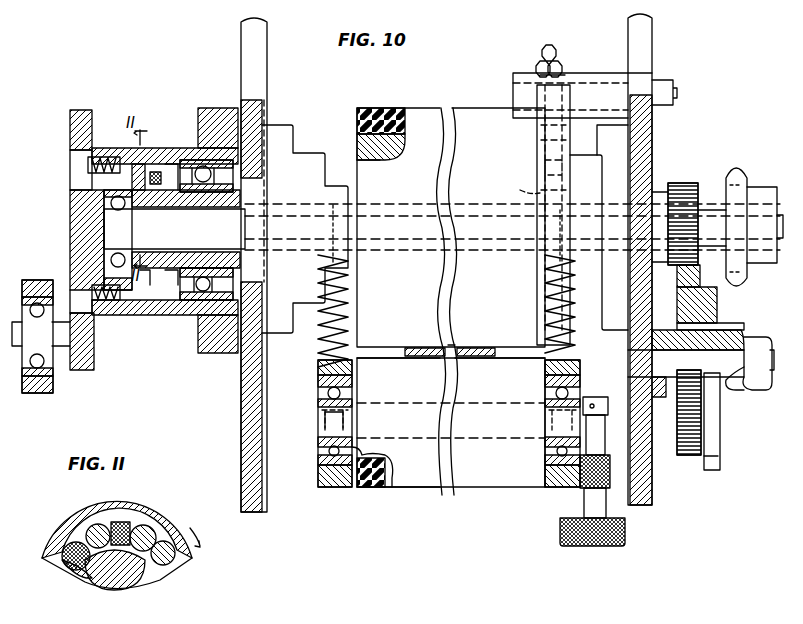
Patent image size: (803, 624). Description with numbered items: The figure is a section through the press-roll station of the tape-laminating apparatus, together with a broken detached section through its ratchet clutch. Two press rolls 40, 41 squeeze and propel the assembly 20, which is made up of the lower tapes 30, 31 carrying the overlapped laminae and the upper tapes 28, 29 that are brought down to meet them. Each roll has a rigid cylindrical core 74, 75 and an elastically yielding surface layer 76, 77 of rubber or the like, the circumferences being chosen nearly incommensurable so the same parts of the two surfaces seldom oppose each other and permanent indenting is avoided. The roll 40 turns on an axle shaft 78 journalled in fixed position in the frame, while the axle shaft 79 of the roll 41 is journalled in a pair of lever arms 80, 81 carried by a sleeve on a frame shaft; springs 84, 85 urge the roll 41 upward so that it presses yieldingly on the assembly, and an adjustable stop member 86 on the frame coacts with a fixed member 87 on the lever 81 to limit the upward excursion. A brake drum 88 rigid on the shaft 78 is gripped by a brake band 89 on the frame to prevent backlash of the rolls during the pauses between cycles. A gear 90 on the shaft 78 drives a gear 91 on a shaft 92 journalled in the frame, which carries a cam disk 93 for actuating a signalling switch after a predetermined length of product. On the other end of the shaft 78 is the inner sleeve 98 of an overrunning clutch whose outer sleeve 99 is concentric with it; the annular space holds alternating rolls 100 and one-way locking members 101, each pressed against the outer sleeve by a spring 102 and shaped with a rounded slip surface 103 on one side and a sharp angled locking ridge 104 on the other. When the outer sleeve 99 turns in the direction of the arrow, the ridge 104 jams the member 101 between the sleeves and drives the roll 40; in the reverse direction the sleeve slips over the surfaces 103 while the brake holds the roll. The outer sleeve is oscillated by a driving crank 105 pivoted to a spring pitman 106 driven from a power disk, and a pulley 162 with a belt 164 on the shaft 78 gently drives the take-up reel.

In FIG. 10, the assembly 20 is at (462, 345).
In FIG. 10, the tape 28 is at (414, 356).
In FIG. 10, the tape 29 is at (480, 356).
In FIG. 10, the tape 30 is at (414, 362).
In FIG. 10, the tape 31 is at (478, 360).
In FIG. 10, the press roll 40 is at (480, 120).
In FIG. 10, the press roll 41 is at (440, 480).
In FIG. 10, the rigid cylindrical core 74 is at (362, 148).
In FIG. 10, the rigid cylindrical core 75 is at (392, 488).
In FIG. 10, the elastically yielding surface layer 76 is at (404, 114).
In FIG. 10, the elastically yielding surface layer 77 is at (372, 488).
In FIG. 10, the axle shaft 78 is at (112, 231).
In FIG. 11, the axle shaft 78 is at (130, 586).
In FIG. 10, the axle shaft 79 is at (322, 432).
In FIG. 10, the lever arm 80 is at (322, 484).
In FIG. 10, the lever arm 81 is at (552, 482).
In FIG. 10, the spring 84 is at (318, 332).
In FIG. 10, the spring 85 is at (578, 349).
In FIG. 10, the adjustable stop member 86 is at (604, 398).
In FIG. 10, the fixed member 87 is at (606, 424).
In FIG. 10, the brake drum 88 is at (526, 186).
In FIG. 10, the brake band 89 is at (545, 170).
In FIG. 10, the gear 90 is at (684, 184).
In FIG. 10, the gear 91 is at (684, 456).
In FIG. 10, the shaft 92 is at (748, 390).
In FIG. 10, the cam disk 93 is at (712, 458).
In FIG. 10, the inner sleeve 98 is at (164, 290).
In FIG. 11, the inner sleeve 98 is at (96, 580).
In FIG. 10, the outer sleeve 99 is at (120, 150).
In FIG. 11, the outer sleeve 99 is at (186, 560).
In FIG. 10, the roll 100 is at (148, 290).
In FIG. 11, the roll 100 is at (88, 540).
In FIG. 10, the one-way locking member 101 is at (172, 164).
In FIG. 11, the one-way locking member 101 is at (150, 538).
In FIG. 10, the spring 102 is at (156, 186).
In FIG. 11, the spring 102 is at (90, 575).
In FIG. 11, the rounded slip surface 103 is at (120, 522).
In FIG. 11, the sharp angled locking ridge 104 is at (100, 524).
In FIG. 10, the driving crank 105 is at (95, 372).
In FIG. 10, the spring pitman 106 is at (43, 393).
In FIG. 10, the pulley 162 is at (744, 272).
In FIG. 10, the belt 164 is at (738, 172).